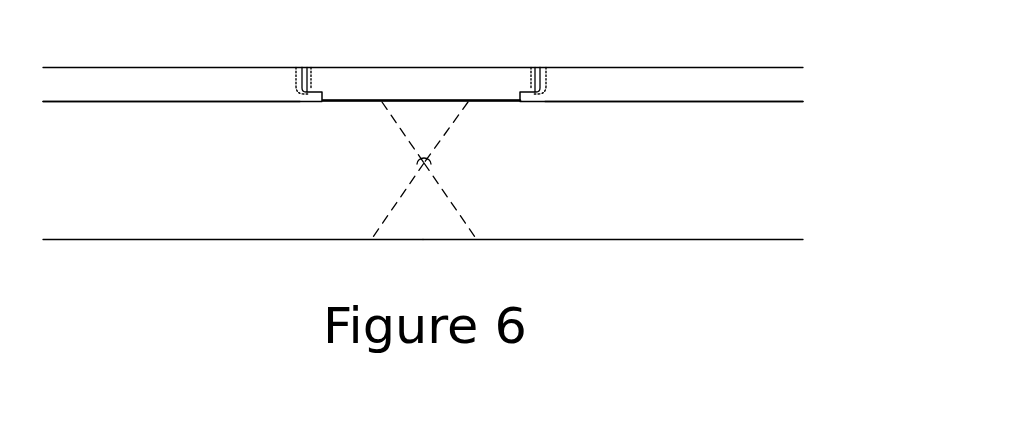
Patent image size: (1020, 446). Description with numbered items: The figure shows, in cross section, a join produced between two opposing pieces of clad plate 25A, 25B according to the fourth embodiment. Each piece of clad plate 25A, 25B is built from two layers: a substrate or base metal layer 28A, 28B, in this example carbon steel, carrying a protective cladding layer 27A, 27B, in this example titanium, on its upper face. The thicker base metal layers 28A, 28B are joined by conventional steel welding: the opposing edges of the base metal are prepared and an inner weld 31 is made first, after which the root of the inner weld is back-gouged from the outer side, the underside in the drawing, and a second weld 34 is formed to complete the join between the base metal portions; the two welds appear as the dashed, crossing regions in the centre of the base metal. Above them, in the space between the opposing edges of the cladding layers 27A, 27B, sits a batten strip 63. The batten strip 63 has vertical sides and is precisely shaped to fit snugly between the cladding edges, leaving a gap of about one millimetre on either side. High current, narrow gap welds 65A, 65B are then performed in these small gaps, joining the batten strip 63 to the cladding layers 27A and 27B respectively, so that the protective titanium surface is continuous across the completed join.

The clad plate 25A is at (247, 250).
The clad plate 25B is at (617, 255).
The protective cladding layer 27A is at (273, 94).
The protective cladding layer 27B is at (640, 95).
The base metal layer 28A is at (281, 180).
The base metal layer 28B is at (638, 181).
The inner weld 31 is at (435, 138).
The second weld 34 is at (435, 211).
The batten strip 63 is at (435, 93).
The narrow gap weld 65A is at (296, 76).
The narrow gap weld 65B is at (547, 72).